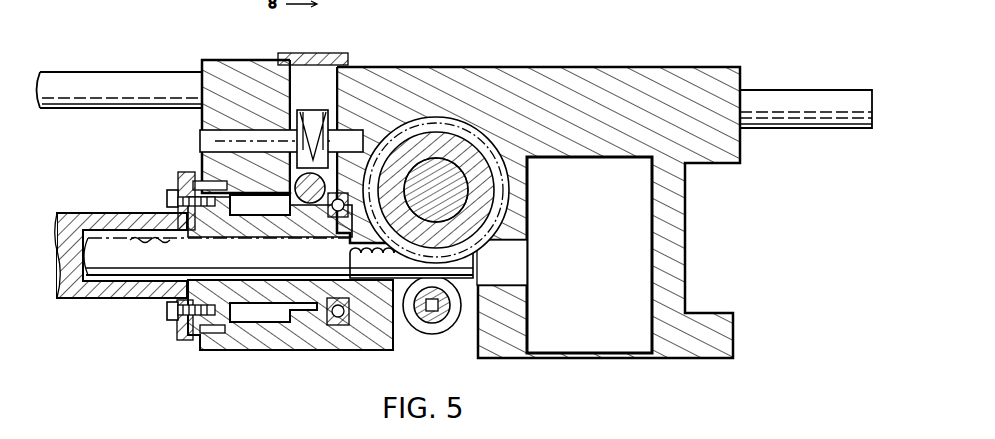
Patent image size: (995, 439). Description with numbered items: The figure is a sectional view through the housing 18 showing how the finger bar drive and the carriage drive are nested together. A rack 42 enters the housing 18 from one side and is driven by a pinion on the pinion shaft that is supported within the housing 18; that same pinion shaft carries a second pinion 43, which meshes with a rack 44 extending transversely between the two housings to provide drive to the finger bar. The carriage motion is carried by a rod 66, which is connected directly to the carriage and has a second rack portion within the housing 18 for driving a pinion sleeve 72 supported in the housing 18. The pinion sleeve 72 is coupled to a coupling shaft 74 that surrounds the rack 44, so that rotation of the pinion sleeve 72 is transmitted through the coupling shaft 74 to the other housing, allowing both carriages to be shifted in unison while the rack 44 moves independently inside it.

The housing 18 is at (525, 88).
The rack 42 is at (107, 82).
The second pinion 43 is at (477, 195).
The rack 44 is at (128, 260).
The rod 66 is at (335, 187).
The pinion sleeve 72 is at (308, 310).
The coupling shaft 74 is at (103, 215).